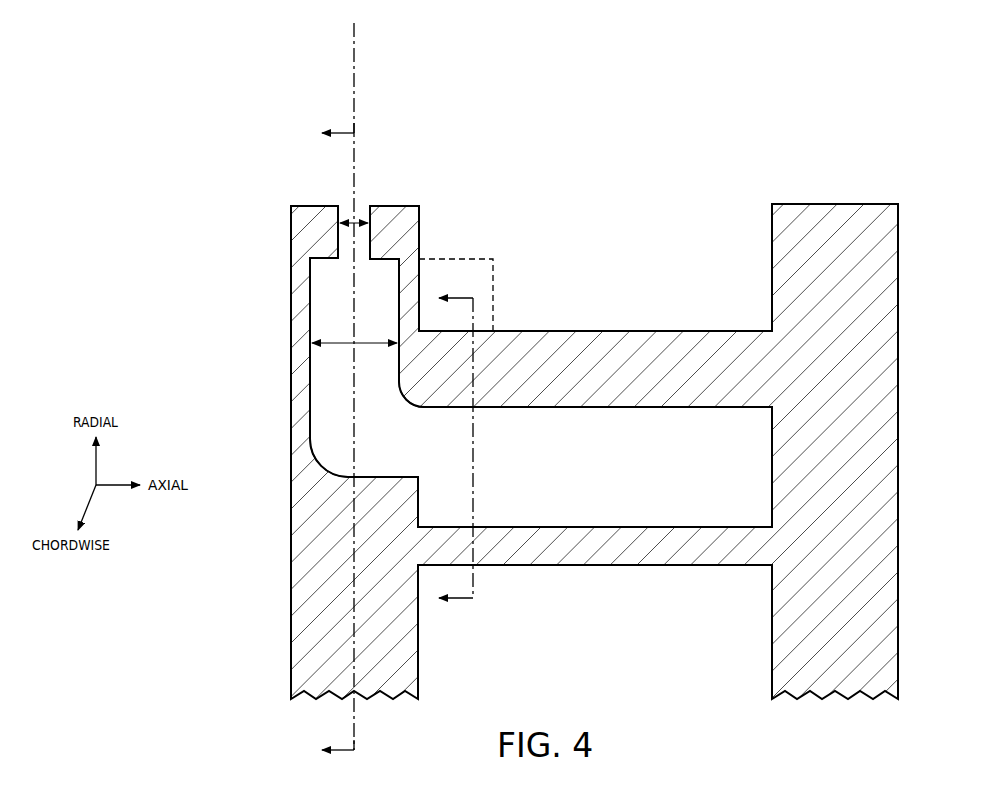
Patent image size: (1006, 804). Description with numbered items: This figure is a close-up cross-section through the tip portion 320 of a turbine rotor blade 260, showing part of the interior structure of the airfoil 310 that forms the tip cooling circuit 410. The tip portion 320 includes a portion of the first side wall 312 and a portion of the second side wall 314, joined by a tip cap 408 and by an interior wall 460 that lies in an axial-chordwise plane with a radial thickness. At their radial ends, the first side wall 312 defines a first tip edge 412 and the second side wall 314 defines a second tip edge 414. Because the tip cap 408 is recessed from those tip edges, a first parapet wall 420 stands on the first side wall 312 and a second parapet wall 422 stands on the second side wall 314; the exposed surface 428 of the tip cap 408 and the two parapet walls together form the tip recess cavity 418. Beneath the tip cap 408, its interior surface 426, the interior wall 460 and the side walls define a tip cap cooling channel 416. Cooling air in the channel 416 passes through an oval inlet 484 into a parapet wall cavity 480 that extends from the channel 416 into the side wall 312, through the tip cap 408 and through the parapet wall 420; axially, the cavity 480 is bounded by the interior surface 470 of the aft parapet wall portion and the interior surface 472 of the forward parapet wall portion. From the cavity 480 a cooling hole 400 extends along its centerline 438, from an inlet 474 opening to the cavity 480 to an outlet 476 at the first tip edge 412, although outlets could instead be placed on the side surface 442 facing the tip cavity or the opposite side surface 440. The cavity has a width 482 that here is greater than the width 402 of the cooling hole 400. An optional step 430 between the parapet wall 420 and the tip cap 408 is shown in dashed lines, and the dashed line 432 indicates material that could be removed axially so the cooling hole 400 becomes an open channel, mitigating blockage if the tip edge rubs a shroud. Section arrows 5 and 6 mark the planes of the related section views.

The rotor blade 260 is at (503, 402).
The airfoil 310 is at (888, 449).
The first side wall 312 is at (306, 652).
The second side wall 314 is at (898, 634).
The tip portion 320 is at (251, 450).
The cooling hole 400 is at (378, 190).
The width of cooling hole 402 is at (358, 222).
The tip cap 408 is at (643, 340).
The tip cooling circuit 410 is at (291, 367).
The first tip edge 412 is at (300, 206).
The second tip edge 414 is at (835, 204).
The tip cap cooling channel 416 is at (595, 467).
The tip recess cavity 418 is at (595, 267).
The first parapet wall 420 is at (255, 218).
The second parapet wall 422 is at (920, 302).
The interior surface of tip cap 426 is at (648, 408).
The exposed surface of tip cap 428 is at (576, 332).
The step 430 is at (483, 258).
The dashed line 432 is at (410, 252).
The centerline 438 is at (356, 73).
The side surface 440 is at (292, 298).
The side surface 442 is at (420, 268).
The interior wall 460 is at (660, 557).
The interior surface of aft parapet wall portion 470 is at (315, 320).
The interior surface of forward parapet wall portion 472 is at (400, 300).
The inlet 474 is at (335, 258).
The outlet 476 is at (344, 205).
The parapet wall cavity 480 is at (350, 435).
The width of parapet wall cavity 482 is at (385, 345).
The inlet 484 is at (411, 445).
The section line 5 is at (325, 444).
The section line 6 is at (452, 458).